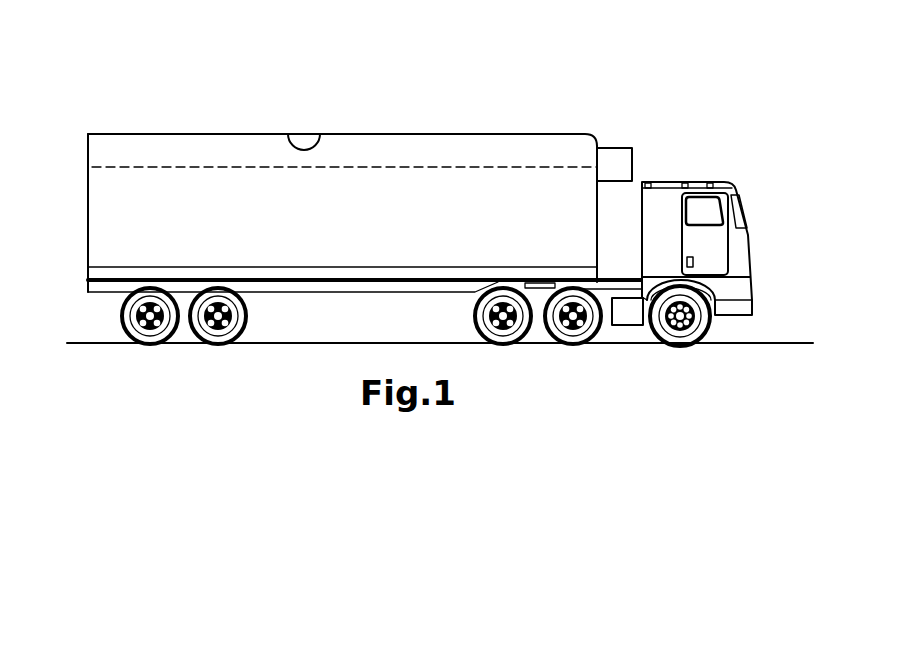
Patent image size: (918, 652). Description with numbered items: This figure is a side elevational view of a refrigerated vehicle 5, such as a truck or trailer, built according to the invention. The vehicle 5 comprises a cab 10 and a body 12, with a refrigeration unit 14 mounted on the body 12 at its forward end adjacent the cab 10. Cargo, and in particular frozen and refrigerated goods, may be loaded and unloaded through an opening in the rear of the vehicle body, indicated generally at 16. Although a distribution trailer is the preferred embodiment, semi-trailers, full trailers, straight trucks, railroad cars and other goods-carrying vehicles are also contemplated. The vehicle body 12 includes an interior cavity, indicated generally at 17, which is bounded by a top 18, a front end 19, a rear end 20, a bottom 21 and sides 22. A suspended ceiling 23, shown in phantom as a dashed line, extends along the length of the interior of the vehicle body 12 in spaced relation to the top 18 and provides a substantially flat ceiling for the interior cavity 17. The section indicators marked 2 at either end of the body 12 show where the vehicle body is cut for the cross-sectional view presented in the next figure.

The section line of FIG. 2 is at (107, 43).
The refrigerated vehicle 5 is at (399, 104).
The cab 10 is at (740, 243).
The body 12 is at (212, 134).
The refrigeration unit 14 is at (626, 161).
The opening in the rear of the vehicle body 16 is at (80, 202).
The interior cavity 17 is at (290, 254).
The top 18 is at (319, 135).
The front end 19 is at (597, 232).
The rear end 20 is at (88, 240).
The bottom 21 is at (413, 295).
The sides 22 is at (375, 218).
The suspended ceiling 23 is at (176, 168).